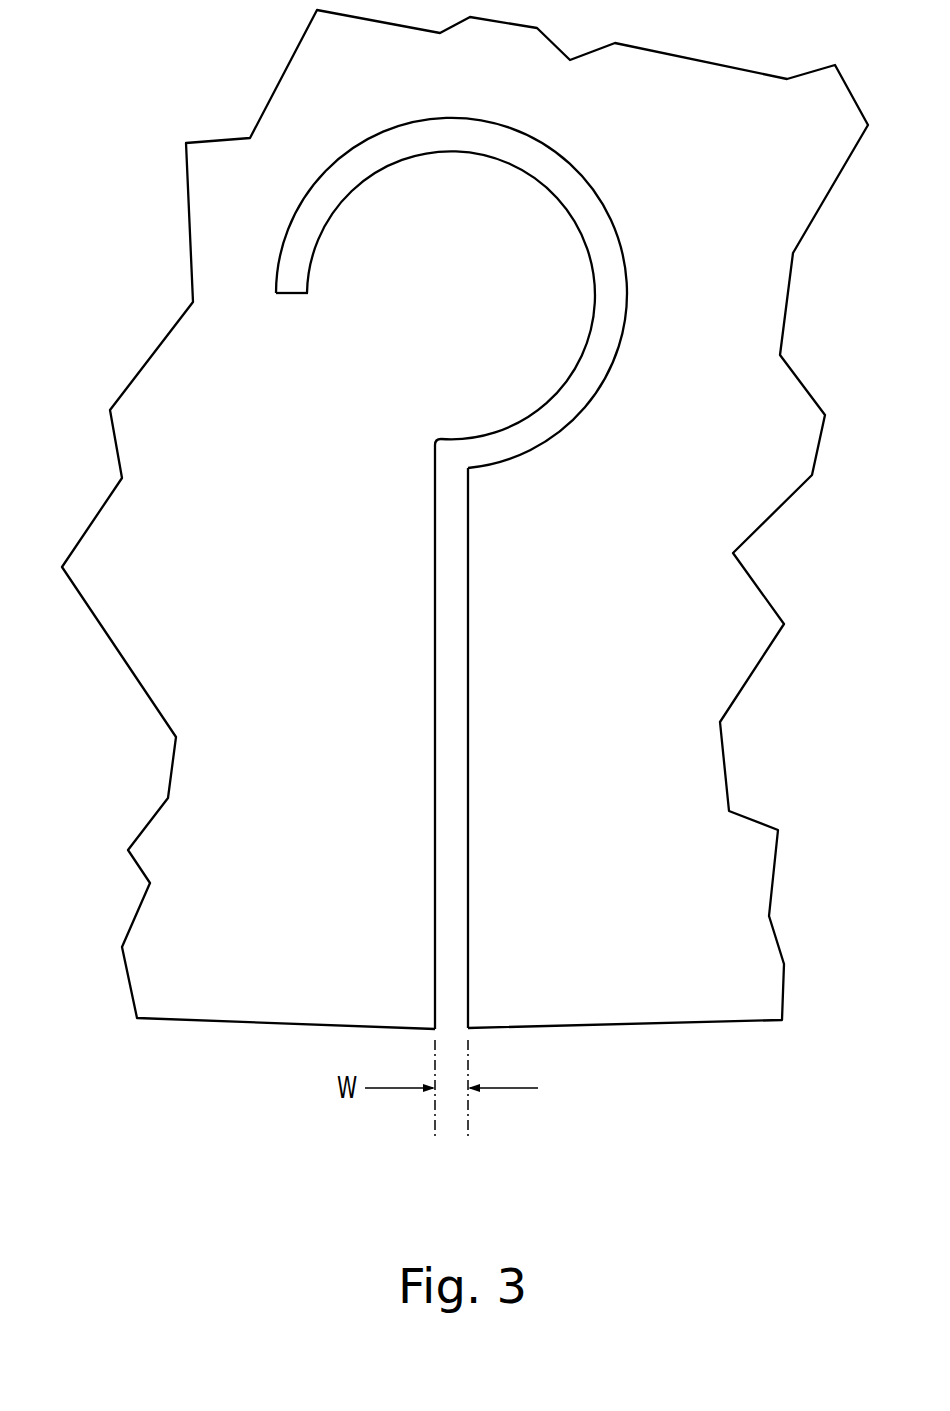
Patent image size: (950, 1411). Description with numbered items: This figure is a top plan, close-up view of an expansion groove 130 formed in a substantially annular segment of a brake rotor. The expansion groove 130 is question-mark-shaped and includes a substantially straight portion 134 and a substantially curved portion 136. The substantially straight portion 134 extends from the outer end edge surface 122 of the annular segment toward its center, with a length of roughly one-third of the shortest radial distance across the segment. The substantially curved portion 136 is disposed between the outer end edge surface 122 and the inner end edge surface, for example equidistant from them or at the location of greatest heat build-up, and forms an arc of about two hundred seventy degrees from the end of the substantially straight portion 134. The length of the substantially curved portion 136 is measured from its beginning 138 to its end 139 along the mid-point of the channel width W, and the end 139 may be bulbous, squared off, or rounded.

The outer end edge surface 122 is at (618, 1030).
The expansion groove 130 is at (497, 573).
The substantially straight portion 134 is at (468, 748).
The substantially curved portion 136 is at (618, 233).
The beginning of the substantially curved portion 138 is at (435, 443).
The end of the substantially curved portion 139 is at (308, 293).